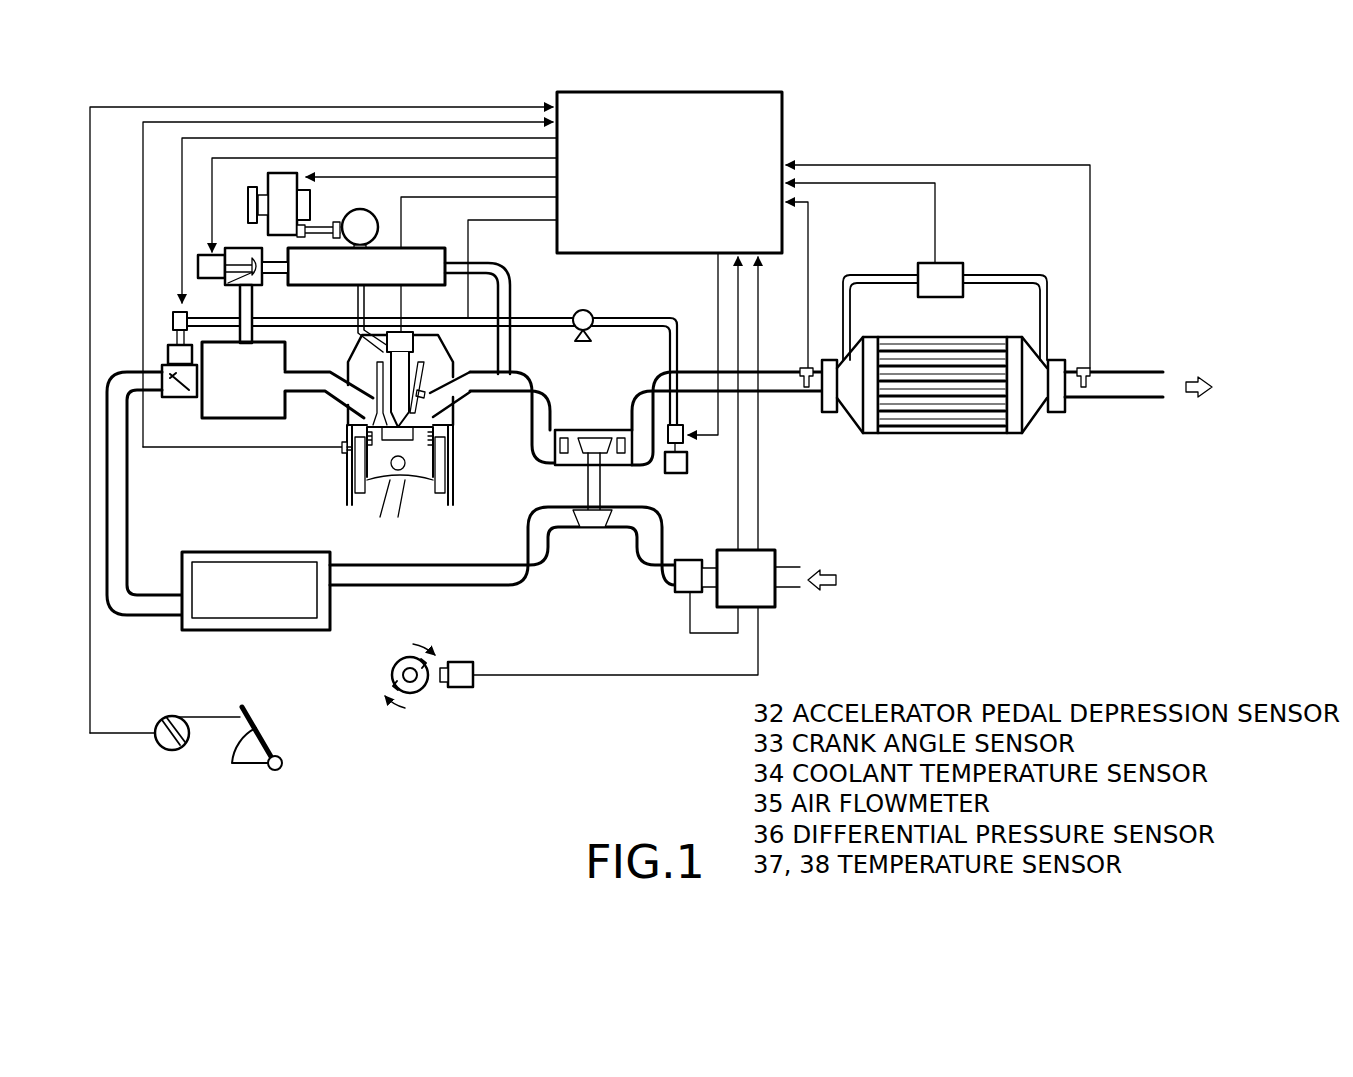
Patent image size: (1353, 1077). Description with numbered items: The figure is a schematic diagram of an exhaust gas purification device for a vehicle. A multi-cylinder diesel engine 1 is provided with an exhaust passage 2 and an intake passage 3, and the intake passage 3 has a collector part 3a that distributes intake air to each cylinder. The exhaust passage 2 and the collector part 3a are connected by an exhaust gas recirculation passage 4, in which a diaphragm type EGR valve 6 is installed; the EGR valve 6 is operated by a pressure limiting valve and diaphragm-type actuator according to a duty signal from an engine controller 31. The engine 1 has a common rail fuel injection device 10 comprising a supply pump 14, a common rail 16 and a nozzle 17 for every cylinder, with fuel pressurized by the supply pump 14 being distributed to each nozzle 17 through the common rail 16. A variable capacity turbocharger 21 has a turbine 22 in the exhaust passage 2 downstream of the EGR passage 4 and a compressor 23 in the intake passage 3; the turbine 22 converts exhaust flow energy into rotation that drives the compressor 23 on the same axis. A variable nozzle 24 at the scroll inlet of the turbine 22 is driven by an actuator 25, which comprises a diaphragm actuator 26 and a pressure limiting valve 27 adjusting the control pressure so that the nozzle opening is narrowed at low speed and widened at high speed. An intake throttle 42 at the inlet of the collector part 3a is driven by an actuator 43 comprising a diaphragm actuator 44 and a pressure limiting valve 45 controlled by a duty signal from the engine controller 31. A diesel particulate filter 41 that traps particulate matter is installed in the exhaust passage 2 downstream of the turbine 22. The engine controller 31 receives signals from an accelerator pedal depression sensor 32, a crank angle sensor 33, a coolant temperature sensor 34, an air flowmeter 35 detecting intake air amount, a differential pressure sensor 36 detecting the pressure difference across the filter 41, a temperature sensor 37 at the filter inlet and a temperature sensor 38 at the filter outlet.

The multi-cylinder diesel engine 1 is at (463, 509).
The exhaust passage 2 is at (537, 393).
The intake passage 3 is at (310, 375).
The collector part 3a is at (214, 405).
The exhaust gas recirculation (EGR) passage 4 is at (513, 292).
The diaphragm type EGR valve 6 is at (228, 285).
The common rail fuel injection device 10 is at (330, 208).
The supply pump 14 is at (283, 173).
The common rail (accumulator) 16 is at (362, 210).
The nozzle 17 is at (413, 341).
The variable capacity turbocharger 21 is at (502, 538).
The turbine 22 is at (585, 444).
The compressor 23 is at (588, 522).
The variable nozzle 24 is at (558, 466).
The actuator 25 is at (713, 460).
The diaphragm actuator 26 is at (667, 467).
The pressure limiting valve 27 is at (688, 427).
The engine controller 31 is at (675, 92).
The accelerator pedal depression sensor 32 is at (164, 750).
The crank angle sensor 33 is at (462, 688).
The coolant temperature sensor 34 is at (337, 450).
The air flowmeter 35 is at (680, 594).
The differential pressure sensor 36 is at (958, 258).
The temperature sensor 37 is at (802, 367).
The temperature sensor 38 is at (1086, 367).
The diesel particulate filter (DPF) 41 is at (982, 422).
The intake throttle 42 is at (162, 378).
The actuator 43 is at (113, 347).
The diaphragm actuator 44 is at (168, 352).
The pressure limiting valve 45 is at (173, 318).